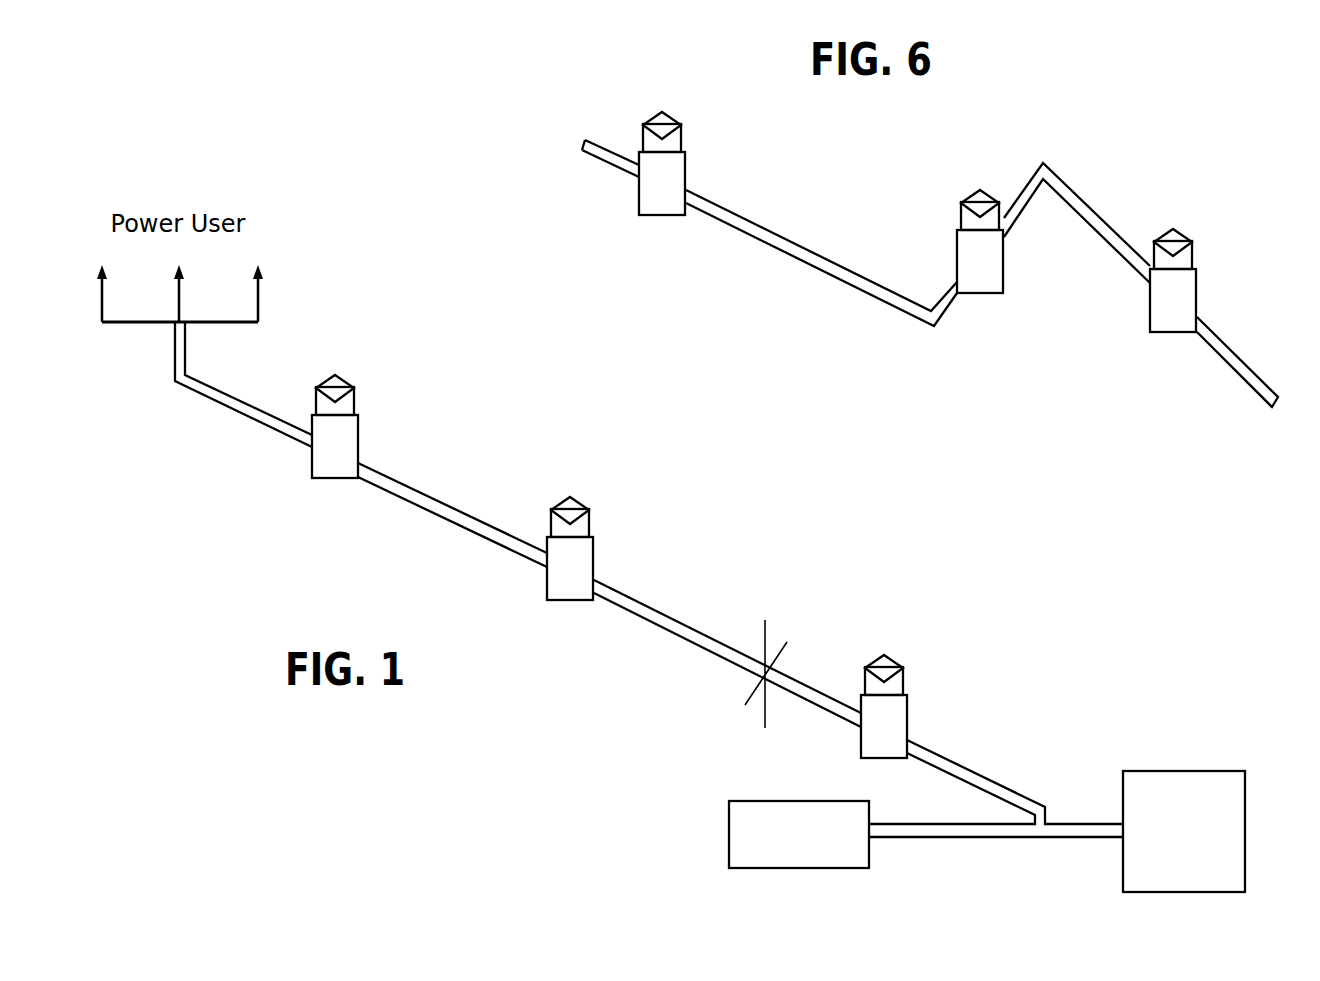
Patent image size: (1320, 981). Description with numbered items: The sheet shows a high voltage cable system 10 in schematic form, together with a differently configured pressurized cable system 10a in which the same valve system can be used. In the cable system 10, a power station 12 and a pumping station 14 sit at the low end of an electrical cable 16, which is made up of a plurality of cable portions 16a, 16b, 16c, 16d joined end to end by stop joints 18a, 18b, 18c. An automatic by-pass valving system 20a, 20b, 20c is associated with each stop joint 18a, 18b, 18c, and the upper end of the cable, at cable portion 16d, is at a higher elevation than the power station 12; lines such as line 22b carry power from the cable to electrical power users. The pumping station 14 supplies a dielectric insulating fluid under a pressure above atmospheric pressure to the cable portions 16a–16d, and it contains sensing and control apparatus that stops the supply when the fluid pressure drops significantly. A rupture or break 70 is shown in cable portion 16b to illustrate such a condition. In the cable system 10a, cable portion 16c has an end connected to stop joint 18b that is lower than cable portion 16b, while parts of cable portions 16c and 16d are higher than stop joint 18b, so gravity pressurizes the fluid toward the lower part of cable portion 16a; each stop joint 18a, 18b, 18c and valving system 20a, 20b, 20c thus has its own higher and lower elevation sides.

In FIG. 1, the high voltage cable system 10 is at (672, 493).
In FIG. 6, the alternative pipeline system 10a is at (1033, 131).
In FIG. 1, the power station 12 is at (1172, 771).
In FIG. 1, the pumping station 14 is at (766, 800).
In FIG. 1, the electrical cable 16 is at (648, 579).
In FIG. 1, the cable portion 16a is at (955, 768).
In FIG. 6, the cable portion 16a is at (1233, 357).
In FIG. 1, the cable portion 16b is at (652, 613).
In FIG. 6, the cable portion 16b is at (1090, 217).
In FIG. 1, the cable portion 16c is at (442, 507).
In FIG. 6, the cable portion 16c is at (822, 260).
In FIG. 1, the cable portion 16d is at (230, 402).
In FIG. 6, the cable portion 16d is at (598, 155).
In FIG. 1, the stop joint 18a is at (878, 762).
In FIG. 1, the stop joint 18b is at (547, 587).
In FIG. 1, the stop joint 18c is at (312, 465).
In FIG. 6, the stop joint 18c is at (639, 203).
In FIG. 1, the automatic by-pass valving system 20a is at (897, 668).
In FIG. 1, the automatic by-pass valving system 20b is at (582, 506).
In FIG. 1, the automatic by-pass valving system 20c is at (260, 308).
In FIG. 6, the automatic by-pass valving system 20c is at (672, 118).
In FIG. 1, the line to electrical power user 22b is at (100, 307).
In FIG. 1, the rupture or break 70 is at (767, 635).